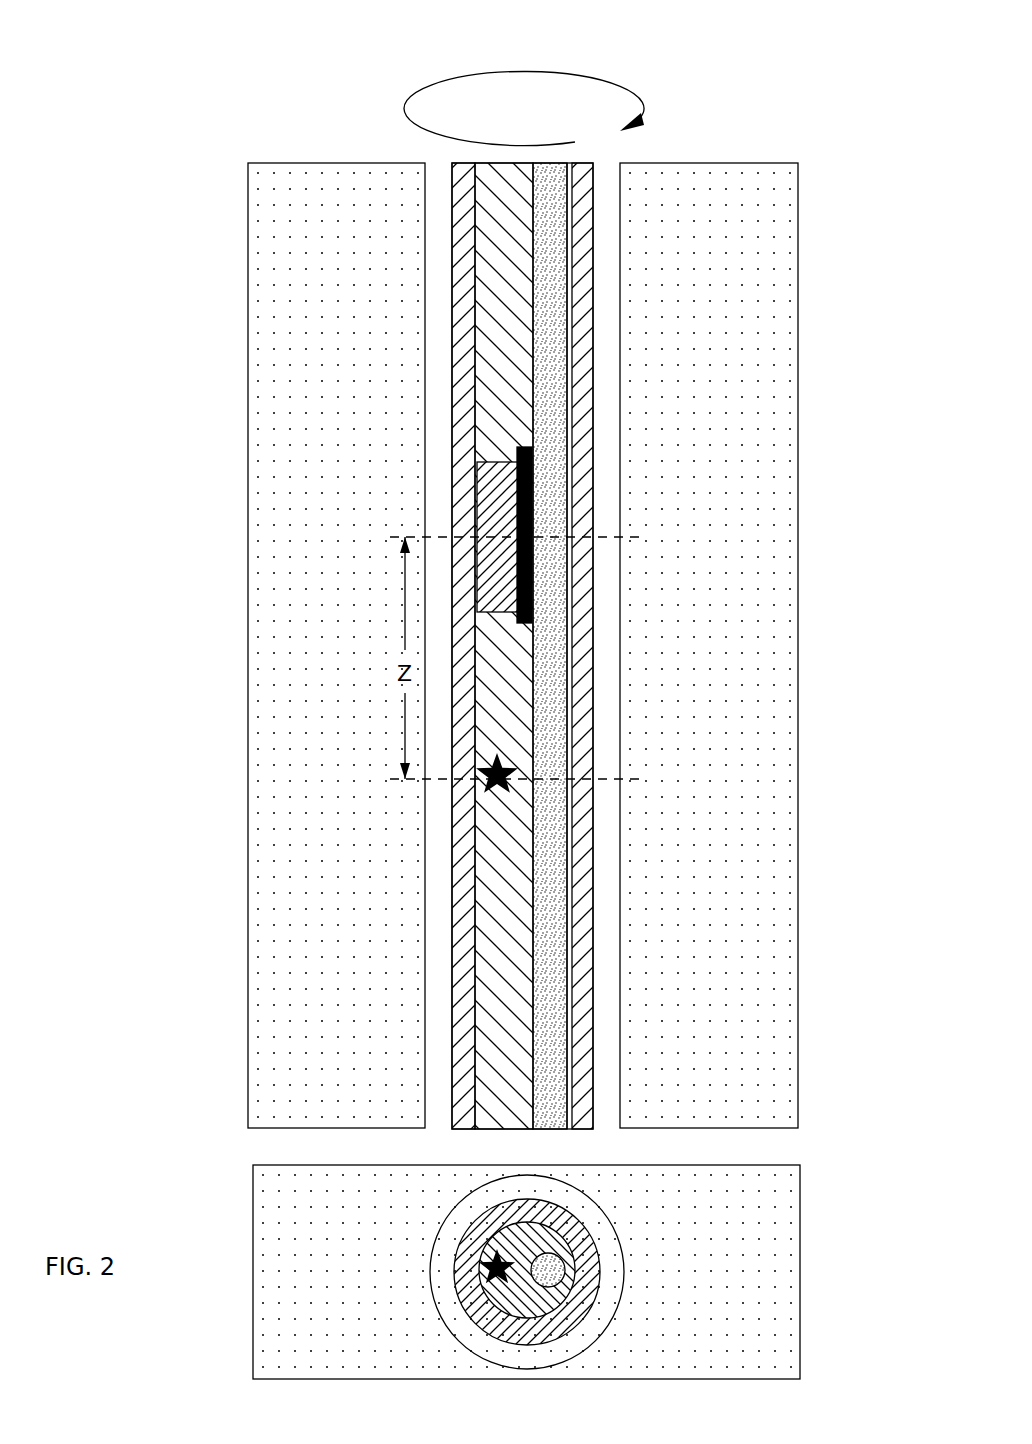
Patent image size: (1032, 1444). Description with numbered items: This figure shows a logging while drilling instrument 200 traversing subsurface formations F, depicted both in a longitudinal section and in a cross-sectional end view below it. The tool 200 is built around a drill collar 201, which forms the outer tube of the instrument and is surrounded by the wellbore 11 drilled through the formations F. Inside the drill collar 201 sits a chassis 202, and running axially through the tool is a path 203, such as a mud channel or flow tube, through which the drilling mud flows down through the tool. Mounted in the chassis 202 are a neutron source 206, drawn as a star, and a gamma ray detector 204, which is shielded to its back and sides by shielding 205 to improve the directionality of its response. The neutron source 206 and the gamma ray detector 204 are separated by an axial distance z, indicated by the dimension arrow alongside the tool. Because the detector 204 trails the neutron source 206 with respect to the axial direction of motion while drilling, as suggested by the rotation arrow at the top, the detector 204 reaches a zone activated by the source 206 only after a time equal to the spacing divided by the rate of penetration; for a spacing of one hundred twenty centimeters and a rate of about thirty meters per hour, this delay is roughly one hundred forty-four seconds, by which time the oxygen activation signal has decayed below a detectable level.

The LWD instrument 200 is at (790, 85).
The drill collar 201 is at (590, 172).
The chassis 202 is at (455, 172).
The path 203 is at (548, 370).
The gamma ray detector 204 is at (475, 487).
The shielding 205 is at (540, 508).
The neutron source 206 is at (480, 785).
The wellbore 11 is at (572, 1195).
The subsurface formations F is at (675, 255).